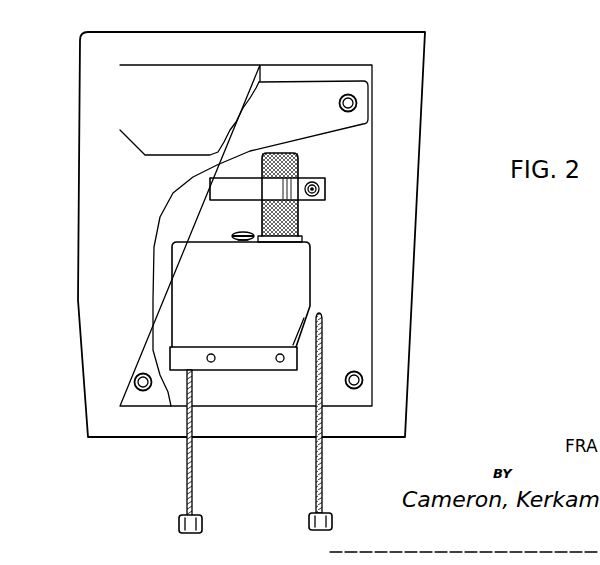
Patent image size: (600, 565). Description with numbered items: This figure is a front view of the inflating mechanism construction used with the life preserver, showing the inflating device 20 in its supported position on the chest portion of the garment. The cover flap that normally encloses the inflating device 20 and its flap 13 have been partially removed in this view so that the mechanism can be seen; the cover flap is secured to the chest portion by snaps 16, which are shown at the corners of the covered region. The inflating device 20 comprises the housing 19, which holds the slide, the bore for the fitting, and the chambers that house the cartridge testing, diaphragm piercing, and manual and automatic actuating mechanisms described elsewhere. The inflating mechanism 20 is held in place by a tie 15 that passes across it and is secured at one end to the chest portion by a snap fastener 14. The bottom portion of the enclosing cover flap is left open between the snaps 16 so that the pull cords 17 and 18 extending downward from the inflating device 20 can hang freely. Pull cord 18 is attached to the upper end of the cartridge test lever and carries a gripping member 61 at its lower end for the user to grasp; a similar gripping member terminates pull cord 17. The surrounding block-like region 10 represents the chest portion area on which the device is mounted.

The mounting block 10 is at (425, 52).
The flap 13 is at (140, 103).
The snap fastener 14 is at (313, 180).
The tie 15 is at (228, 194).
The snaps 16 is at (350, 102).
The pull cord 17 is at (187, 478).
The pull cord 18 is at (323, 482).
The housing 19 is at (313, 299).
The inflating device 20 is at (285, 271).
The gripping member 61 is at (321, 522).